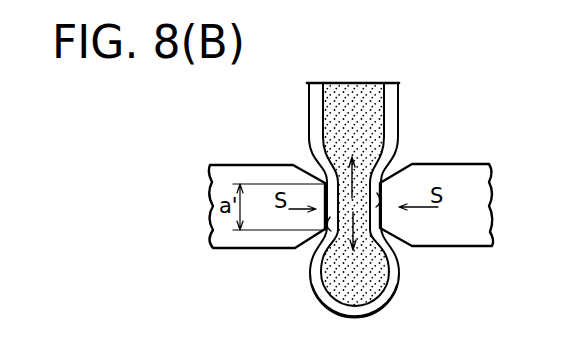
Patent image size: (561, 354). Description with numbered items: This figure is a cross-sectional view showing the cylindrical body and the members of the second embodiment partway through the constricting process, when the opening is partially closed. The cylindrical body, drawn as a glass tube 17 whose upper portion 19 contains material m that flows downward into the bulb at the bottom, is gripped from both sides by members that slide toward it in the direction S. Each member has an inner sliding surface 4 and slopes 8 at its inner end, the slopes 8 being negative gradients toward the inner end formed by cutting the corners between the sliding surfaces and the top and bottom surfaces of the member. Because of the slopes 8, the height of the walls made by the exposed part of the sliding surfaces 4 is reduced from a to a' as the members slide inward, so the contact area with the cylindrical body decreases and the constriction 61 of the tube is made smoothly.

The molten glass / filling material in tube 19 is at (362, 92).
The glass tube 17 is at (385, 95).
The molten material flow m is at (372, 172).
The tube wall constriction 61 is at (395, 176).
The slope 8 is at (408, 247).
The sliding surface 4 is at (322, 250).